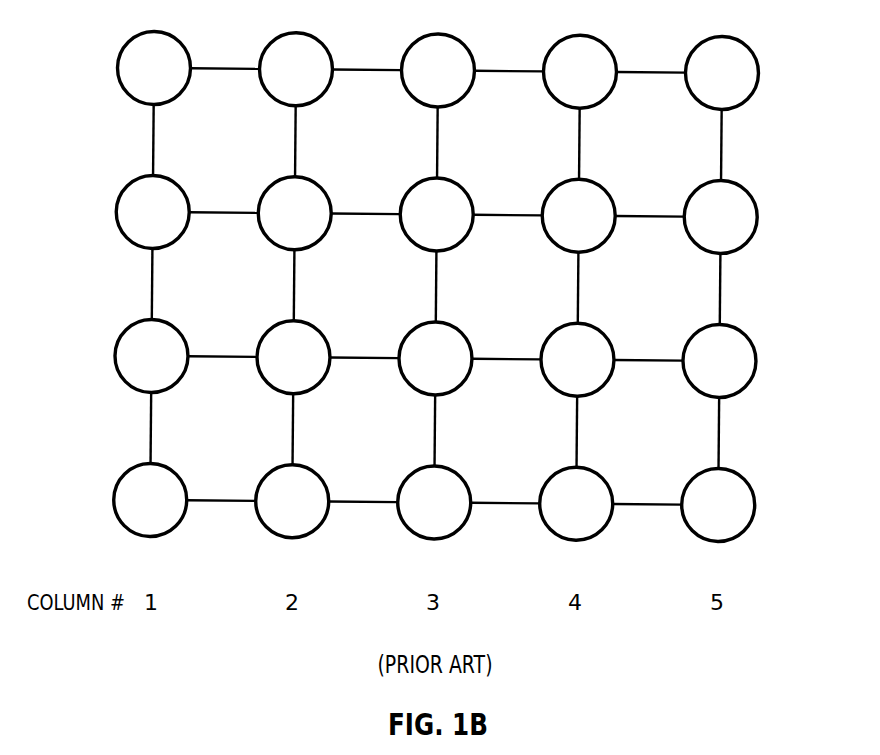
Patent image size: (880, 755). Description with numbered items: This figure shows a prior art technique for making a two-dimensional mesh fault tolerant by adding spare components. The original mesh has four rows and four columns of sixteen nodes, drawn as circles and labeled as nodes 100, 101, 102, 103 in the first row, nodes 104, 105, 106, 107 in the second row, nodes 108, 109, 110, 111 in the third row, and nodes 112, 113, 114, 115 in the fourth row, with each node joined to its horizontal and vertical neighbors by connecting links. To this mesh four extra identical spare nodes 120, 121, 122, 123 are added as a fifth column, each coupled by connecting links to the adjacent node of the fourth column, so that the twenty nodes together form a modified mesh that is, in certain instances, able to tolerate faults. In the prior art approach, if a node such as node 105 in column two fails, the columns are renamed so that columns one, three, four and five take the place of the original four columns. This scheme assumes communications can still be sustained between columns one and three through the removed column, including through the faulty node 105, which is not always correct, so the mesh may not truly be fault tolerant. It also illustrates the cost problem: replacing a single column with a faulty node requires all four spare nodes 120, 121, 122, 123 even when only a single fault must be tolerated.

The node 100 is at (176, 38).
The node 101 is at (318, 38).
The node 102 is at (460, 38).
The node 103 is at (602, 38).
The node 104 is at (176, 182).
The node 105 is at (318, 182).
The node 106 is at (460, 182).
The node 107 is at (602, 182).
The node 108 is at (176, 326).
The node 109 is at (318, 326).
The node 110 is at (460, 326).
The node 111 is at (602, 326).
The node 112 is at (176, 470).
The node 113 is at (318, 470).
The node 114 is at (460, 470).
The node 115 is at (602, 470).
The spare node 120 is at (744, 38).
The spare node 121 is at (744, 182).
The spare node 122 is at (744, 326).
The spare node 123 is at (744, 470).